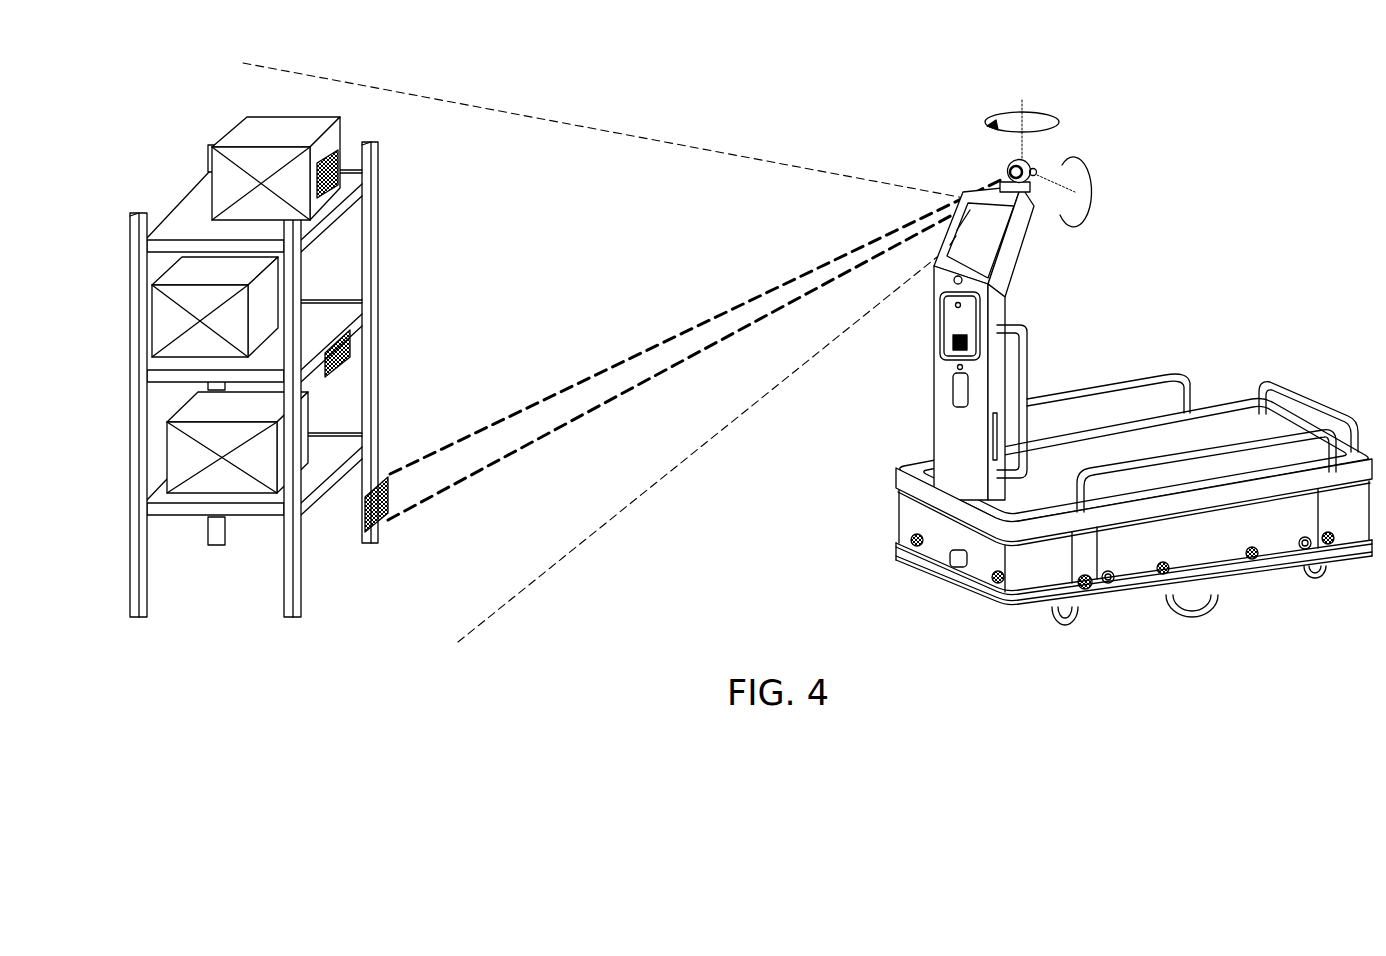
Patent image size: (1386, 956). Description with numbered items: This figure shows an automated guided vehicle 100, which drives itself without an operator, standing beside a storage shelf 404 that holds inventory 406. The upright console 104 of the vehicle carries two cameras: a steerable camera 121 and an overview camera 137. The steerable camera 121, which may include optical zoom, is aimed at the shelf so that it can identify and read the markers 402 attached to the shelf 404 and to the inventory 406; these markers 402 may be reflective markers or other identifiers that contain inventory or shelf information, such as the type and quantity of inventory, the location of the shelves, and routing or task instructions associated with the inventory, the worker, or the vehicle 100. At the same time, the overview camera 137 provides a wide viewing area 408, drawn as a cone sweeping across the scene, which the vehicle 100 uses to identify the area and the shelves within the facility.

The automated guided vehicle 100 is at (1132, 362).
The console 104 is at (878, 207).
The steerable camera 121 is at (1036, 167).
The overview camera 137 is at (995, 208).
The markers 402 is at (335, 170).
The shelf 404 is at (378, 258).
The inventory 406 is at (245, 137).
The viewing area 408 is at (628, 136).